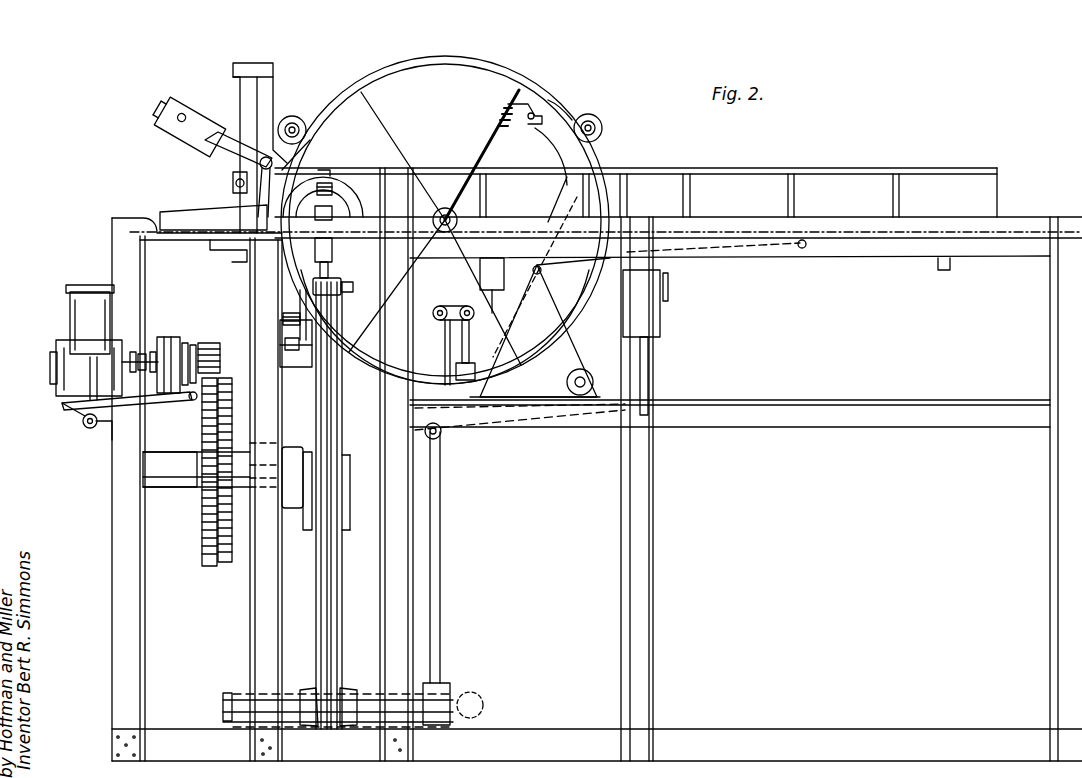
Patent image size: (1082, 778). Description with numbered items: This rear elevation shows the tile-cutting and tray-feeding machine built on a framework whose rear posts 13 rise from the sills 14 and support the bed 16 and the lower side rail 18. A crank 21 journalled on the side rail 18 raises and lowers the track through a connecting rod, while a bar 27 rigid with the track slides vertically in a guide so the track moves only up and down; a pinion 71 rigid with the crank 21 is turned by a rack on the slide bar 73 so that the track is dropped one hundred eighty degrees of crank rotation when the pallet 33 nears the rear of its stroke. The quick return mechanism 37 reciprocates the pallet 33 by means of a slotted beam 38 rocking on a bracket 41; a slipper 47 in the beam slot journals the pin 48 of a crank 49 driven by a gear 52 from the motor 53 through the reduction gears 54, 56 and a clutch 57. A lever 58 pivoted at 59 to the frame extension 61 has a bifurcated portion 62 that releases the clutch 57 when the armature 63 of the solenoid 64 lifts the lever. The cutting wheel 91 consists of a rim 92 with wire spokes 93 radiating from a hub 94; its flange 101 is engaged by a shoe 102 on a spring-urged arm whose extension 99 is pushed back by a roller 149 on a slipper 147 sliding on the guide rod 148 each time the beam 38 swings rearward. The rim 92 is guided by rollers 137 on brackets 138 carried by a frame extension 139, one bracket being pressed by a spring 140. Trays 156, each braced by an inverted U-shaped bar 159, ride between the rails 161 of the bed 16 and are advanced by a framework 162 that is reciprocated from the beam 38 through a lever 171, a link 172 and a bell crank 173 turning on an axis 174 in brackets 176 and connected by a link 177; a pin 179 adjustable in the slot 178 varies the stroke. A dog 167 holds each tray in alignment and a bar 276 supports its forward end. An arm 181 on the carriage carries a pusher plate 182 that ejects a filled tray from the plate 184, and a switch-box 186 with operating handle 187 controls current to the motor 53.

The rear posts 13 is at (648, 621).
The sills 14 is at (750, 734).
The bed 16 is at (1042, 217).
The lower side rail 18 is at (295, 367).
The crank 21 is at (302, 329).
The bar 27 is at (333, 254).
The pallet 33 is at (352, 205).
The quick return mechanism 37 is at (345, 552).
The beam 38 is at (334, 429).
The bracket 41 is at (357, 690).
The slipper 47 is at (342, 490).
The pin 48 is at (300, 530).
The crank 49 is at (291, 459).
The gear 52 is at (208, 567).
The motor 53 is at (60, 344).
The reduction gear 54 is at (223, 564).
The reduction gear 56 is at (214, 346).
The clutch 57 is at (165, 338).
The lever 58 is at (75, 429).
The pivot 59 is at (192, 401).
The extension 61 is at (196, 346).
The bifurcated portion 62 is at (185, 343).
The armature 63 is at (84, 404).
The solenoid 64 is at (84, 288).
The pinion 71 is at (283, 316).
The slide bar 73 is at (285, 347).
The cutting wheel 91 is at (540, 71).
The rim 92 is at (458, 58).
The wire spokes 93 is at (382, 94).
The hub 94 is at (459, 218).
The extension 99 is at (160, 116).
The flange 101 is at (600, 165).
The shoe 102 is at (264, 219).
The rollers 137 is at (603, 128).
The bracket 138 is at (584, 113).
The extension 139 is at (550, 137).
The spring 140 is at (506, 108).
The slipper 147 is at (233, 183).
The guide rod 148 is at (240, 105).
The roller 149 is at (258, 163).
The tray 156 is at (934, 168).
The inverted U-shaped bar 159 is at (998, 200).
The rails 161 is at (843, 227).
The framework 162 is at (998, 256).
The dog 167 is at (332, 183).
The lever 171 is at (474, 705).
The link 172 is at (441, 587).
The bell crank 173 is at (548, 398).
The axis 174 is at (585, 375).
The brackets 176 is at (591, 400).
The link 177 is at (614, 264).
The slot 178 is at (440, 434).
The pin 179 is at (442, 440).
The arm 181 is at (210, 247).
The pusher plate 182 is at (187, 211).
The plate 184 is at (112, 218).
The switch-box 186 is at (661, 322).
The operating handle 187 is at (662, 295).
The bar 276 is at (357, 177).